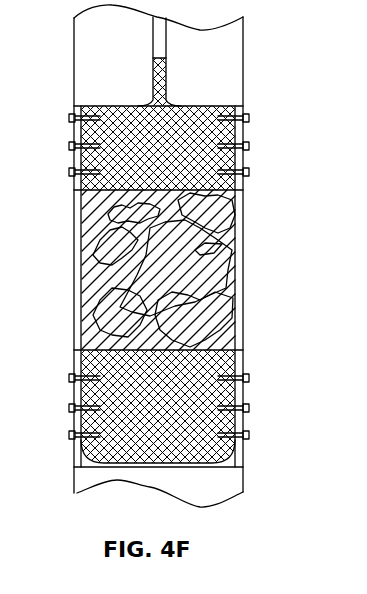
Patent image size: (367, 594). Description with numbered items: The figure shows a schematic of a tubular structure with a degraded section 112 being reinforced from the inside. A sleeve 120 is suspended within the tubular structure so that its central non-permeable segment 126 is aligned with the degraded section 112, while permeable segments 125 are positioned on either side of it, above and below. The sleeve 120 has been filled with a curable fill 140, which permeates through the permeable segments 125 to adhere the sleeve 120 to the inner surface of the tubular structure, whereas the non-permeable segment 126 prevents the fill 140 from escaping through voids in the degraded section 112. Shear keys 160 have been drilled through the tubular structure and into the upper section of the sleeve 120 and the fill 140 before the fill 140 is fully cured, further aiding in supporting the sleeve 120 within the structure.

The degraded section 112 is at (240, 194).
The sleeve 120 is at (242, 308).
The permeable segment 125 is at (80, 127).
The non-permeable segment 126 is at (85, 203).
The fill 140 is at (238, 132).
The shear key 160 is at (243, 117).